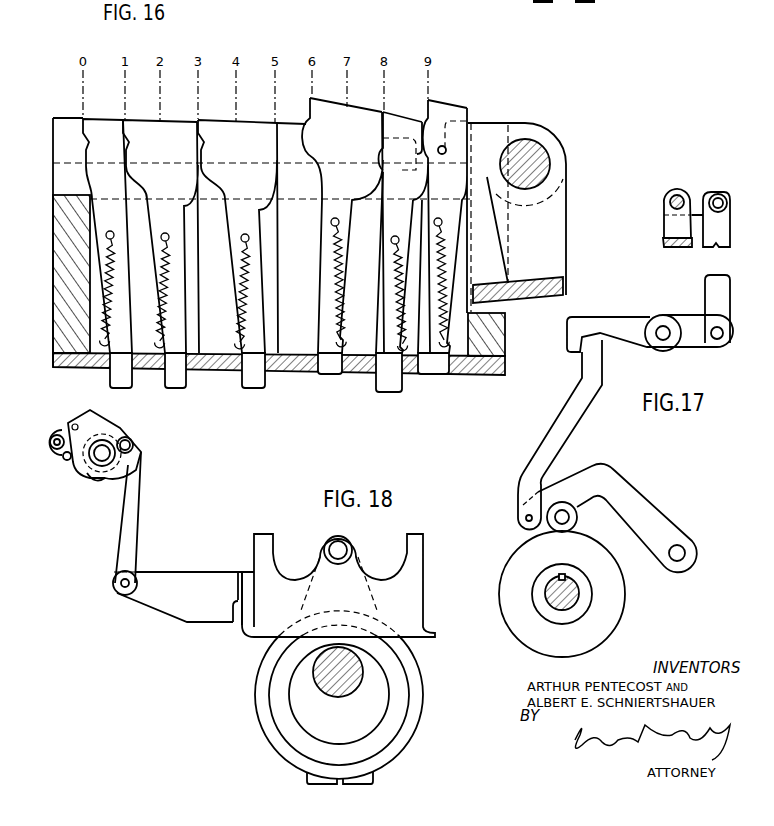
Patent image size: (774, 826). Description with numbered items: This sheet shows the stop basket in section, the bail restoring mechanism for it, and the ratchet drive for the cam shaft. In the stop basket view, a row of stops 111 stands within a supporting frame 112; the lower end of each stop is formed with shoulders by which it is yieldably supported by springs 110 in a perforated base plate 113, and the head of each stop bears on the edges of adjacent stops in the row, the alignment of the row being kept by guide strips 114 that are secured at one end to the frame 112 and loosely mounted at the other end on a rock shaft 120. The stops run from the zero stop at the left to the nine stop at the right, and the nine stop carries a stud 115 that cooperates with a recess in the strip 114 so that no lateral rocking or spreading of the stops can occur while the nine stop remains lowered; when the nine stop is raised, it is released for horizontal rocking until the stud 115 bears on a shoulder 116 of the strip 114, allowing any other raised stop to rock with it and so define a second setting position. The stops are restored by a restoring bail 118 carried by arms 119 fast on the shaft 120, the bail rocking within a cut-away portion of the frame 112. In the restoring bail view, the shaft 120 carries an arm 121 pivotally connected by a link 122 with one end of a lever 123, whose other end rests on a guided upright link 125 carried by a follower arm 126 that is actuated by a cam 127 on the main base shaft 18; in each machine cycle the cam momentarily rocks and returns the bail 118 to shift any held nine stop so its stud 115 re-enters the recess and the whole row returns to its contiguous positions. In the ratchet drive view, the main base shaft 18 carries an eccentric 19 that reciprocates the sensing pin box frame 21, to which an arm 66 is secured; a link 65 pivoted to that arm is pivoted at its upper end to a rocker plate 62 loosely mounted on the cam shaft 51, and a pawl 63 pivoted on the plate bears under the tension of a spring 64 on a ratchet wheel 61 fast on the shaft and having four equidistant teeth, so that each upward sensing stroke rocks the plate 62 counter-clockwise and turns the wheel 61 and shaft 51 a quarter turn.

In FIG. 16, the springs 110 is at (323, 272).
In FIG. 16, the stop 111 is at (323, 247).
In FIG. 16, the supporting frame 112 is at (56, 325).
In FIG. 16, the perforated base plate 113 is at (298, 370).
In FIG. 16, the guide strips 114 is at (303, 184).
In FIG. 16, the stud 115 is at (441, 155).
In FIG. 16, the shoulder 116 is at (468, 108).
In FIG. 16, the restoring bail 118 is at (558, 292).
In FIG. 16, the arms 119 is at (547, 238).
In FIG. 16, the rock shaft 120 is at (551, 163).
In FIG. 17, the rock shaft 120 is at (680, 196).
In FIG. 17, the arm 121 is at (706, 194).
In FIG. 17, the link 122 is at (723, 281).
In FIG. 17, the lever 123 is at (638, 333).
In FIG. 17, the upright link 125 is at (557, 431).
In FIG. 17, the follower arm 126 is at (663, 526).
In FIG. 17, the cam 127 is at (610, 601).
In FIG. 18, the main base shaft 18 is at (355, 683).
In FIG. 17, the main base shaft 18 is at (575, 603).
In FIG. 18, the eccentric 19 is at (397, 710).
In FIG. 18, the sensing pin box frame 21 is at (262, 632).
In FIG. 18, the cam shaft 51 is at (120, 453).
In FIG. 18, the ratchet wheel 61 is at (100, 480).
In FIG. 18, the rocker plate 62 is at (93, 425).
In FIG. 18, the pawl 63 is at (73, 465).
In FIG. 18, the spring 64 is at (72, 414).
In FIG. 18, the link 65 is at (130, 502).
In FIG. 18, the arm 66 is at (202, 582).